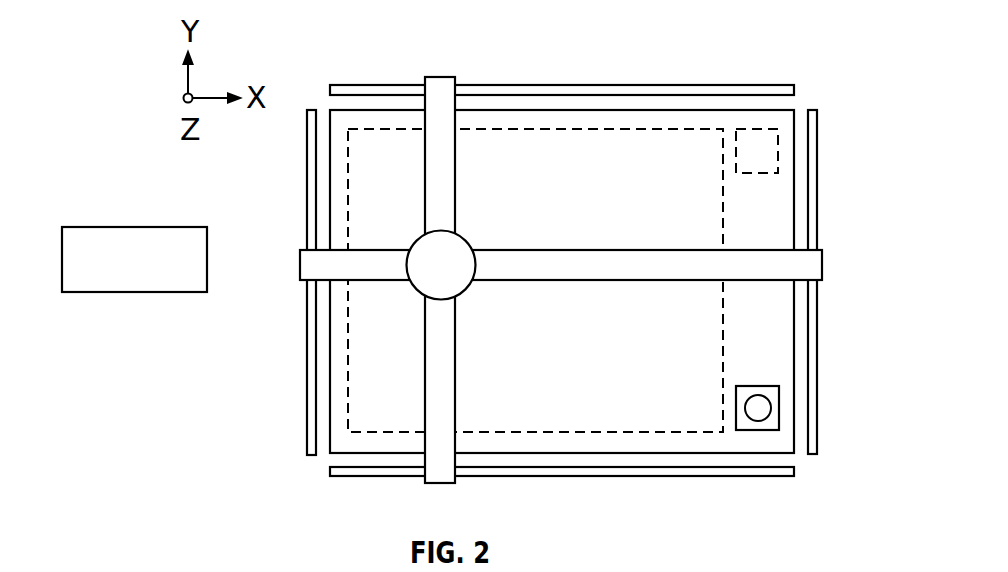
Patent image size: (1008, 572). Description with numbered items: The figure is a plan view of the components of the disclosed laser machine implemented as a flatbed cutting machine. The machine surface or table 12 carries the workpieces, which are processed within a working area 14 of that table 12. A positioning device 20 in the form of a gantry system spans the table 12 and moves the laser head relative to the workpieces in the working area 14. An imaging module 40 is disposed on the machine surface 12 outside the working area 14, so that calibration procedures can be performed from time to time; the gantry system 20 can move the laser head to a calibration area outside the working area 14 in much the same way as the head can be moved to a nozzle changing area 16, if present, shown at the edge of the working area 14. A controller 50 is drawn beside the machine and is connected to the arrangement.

The machine surface or table 12 is at (713, 110).
The working area 14 is at (723, 362).
The nozzle changing area 16 is at (780, 154).
The positioning device 20 is at (408, 152).
The imaging module 40 is at (779, 408).
The controller 50 is at (103, 227).